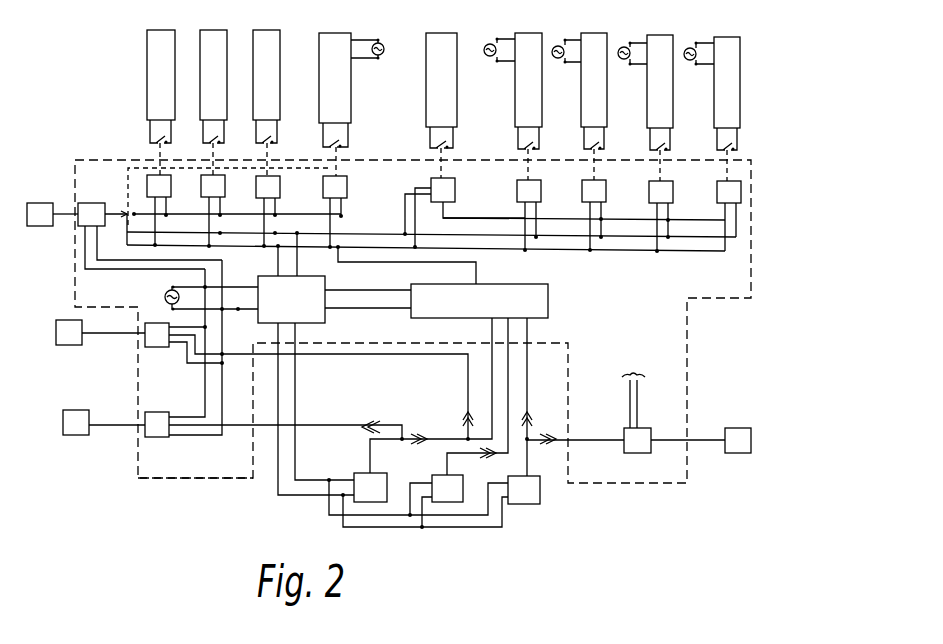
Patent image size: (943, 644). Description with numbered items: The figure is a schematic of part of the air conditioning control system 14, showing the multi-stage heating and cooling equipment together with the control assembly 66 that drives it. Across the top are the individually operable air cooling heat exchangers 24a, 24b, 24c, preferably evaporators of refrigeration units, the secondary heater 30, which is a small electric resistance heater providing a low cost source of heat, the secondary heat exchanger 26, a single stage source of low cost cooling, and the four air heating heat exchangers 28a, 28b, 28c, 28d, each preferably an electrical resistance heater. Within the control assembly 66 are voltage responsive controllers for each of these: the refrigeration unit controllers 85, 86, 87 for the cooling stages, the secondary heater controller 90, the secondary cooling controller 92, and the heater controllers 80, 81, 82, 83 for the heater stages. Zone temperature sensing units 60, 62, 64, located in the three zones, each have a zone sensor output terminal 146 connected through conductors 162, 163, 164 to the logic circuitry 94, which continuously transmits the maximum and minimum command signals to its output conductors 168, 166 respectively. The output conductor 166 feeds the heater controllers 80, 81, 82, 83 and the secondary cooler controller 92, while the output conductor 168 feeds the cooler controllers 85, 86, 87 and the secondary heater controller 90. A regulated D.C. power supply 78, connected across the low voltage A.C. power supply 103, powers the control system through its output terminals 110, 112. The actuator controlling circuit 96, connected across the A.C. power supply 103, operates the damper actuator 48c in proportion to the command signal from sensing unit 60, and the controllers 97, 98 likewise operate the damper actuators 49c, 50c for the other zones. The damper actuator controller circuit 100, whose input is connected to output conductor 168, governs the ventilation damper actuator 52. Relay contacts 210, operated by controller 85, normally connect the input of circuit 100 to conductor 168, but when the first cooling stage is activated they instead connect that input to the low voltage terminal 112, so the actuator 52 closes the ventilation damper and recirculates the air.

The control system 14 is at (122, 142).
The air cooling heat exchanger 24a is at (161, 36).
The air cooling heat exchanger 24b is at (218, 36).
The air cooling heat exchanger 24c is at (288, 12).
The secondary heater 30 is at (330, 36).
The secondary heat exchanger 26 is at (444, 38).
The air heating heat exchanger 28a is at (525, 40).
The air heating heat exchanger 28b is at (591, 40).
The air heating heat exchanger 28c is at (657, 40).
The air heating heat exchanger 28d is at (730, 40).
The refrigeration unit controller 85 is at (159, 211).
The refrigeration unit controller 86 is at (213, 211).
The refrigeration unit controller 87 is at (268, 212).
The secondary heater controller 90 is at (335, 212).
The secondary cooling controller 92 is at (464, 213).
The heater controller 80 is at (529, 216).
The heater controller 81 is at (594, 216).
The heater controller 82 is at (661, 217).
The heater controller 83 is at (729, 216).
The ventilation damper actuator 52 is at (52, 214).
The damper actuator controller circuit 100 is at (150, 236).
The relay contacts 210 is at (130, 207).
The power supply output terminal 110 is at (299, 238).
The power supply output terminal 112 is at (277, 248).
The output conductor 166 is at (561, 223).
The output conductor 168 is at (365, 270).
The regulated D.C. power supply 78 is at (334, 299).
The logic circuitry 94 is at (479, 301).
The A.C. power supply 103 is at (165, 295).
The damper actuator controller 97 is at (184, 344).
The actuator controlling circuit 96 is at (273, 349).
The damper actuator 49c is at (64, 346).
The damper actuator 48c is at (70, 436).
The conductor 163 is at (490, 384).
The conductor 162 is at (463, 420).
The conductor 164 is at (527, 390).
The zone sensor output terminal 146 is at (402, 437).
The zone temperature sensing unit 60 is at (332, 412).
The zone temperature sensing unit 62 is at (458, 423).
The zone temperature sensing unit 64 is at (434, 501).
The actuator controlling circuit 98 is at (593, 400).
The damper actuator 50c is at (732, 454).
The control assembly 66 is at (223, 482).